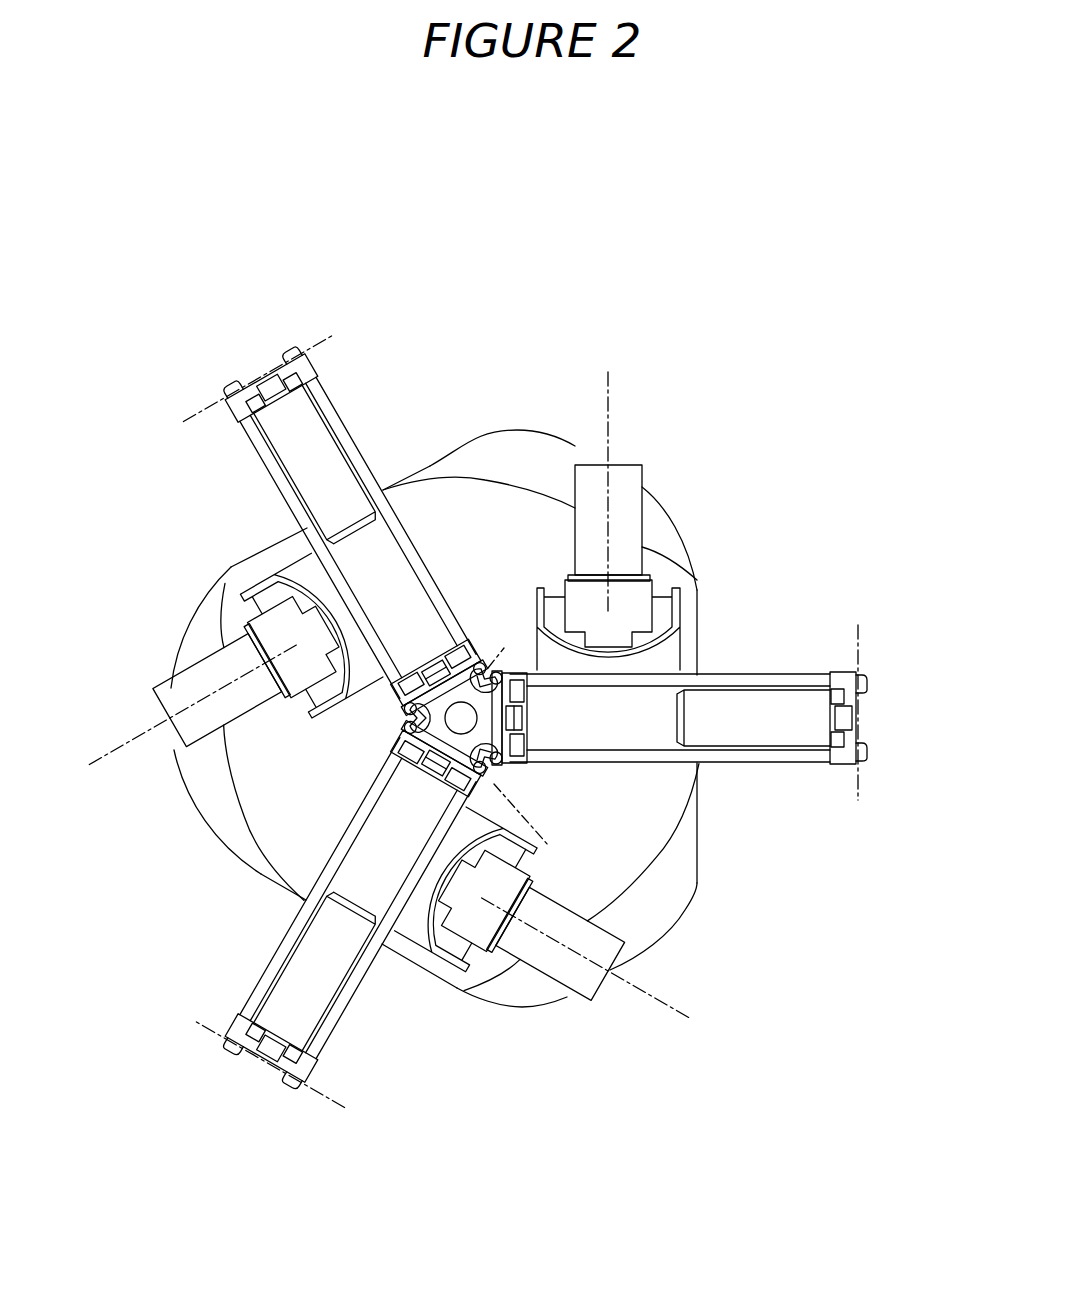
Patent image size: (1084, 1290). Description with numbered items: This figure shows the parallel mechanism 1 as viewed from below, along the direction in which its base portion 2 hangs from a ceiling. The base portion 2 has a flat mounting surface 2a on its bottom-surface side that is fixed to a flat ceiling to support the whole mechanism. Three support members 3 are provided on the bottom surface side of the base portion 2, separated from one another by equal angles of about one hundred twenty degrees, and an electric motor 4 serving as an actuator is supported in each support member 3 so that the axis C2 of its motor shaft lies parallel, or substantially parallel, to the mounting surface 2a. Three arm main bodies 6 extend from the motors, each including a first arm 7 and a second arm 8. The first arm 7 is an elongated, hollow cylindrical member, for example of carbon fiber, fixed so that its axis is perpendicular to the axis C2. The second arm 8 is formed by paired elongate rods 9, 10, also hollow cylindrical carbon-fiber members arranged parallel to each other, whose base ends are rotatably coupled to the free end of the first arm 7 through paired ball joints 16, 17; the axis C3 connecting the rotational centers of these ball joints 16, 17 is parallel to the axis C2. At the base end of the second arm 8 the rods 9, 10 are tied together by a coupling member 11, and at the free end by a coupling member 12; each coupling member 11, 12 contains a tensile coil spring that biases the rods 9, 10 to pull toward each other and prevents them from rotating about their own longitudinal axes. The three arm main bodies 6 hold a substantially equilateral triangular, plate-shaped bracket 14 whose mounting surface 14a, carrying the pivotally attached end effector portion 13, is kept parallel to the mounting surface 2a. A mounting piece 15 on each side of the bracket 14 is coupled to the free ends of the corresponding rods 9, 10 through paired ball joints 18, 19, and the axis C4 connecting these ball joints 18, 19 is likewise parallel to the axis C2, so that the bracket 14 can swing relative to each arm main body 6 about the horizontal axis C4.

The parallel mechanism 1 is at (683, 292).
The base portion 2 is at (520, 428).
The mounting surface 2a is at (688, 540).
The support member 3 is at (305, 548).
The electric motor 4 is at (620, 515).
The arm main body 6 is at (557, 711).
The first arm 7 is at (330, 418).
The second arm 8 is at (496, 717).
The rod 9 is at (300, 488).
The rod 10 is at (280, 432).
The coupling member 11 is at (262, 372).
The coupling member 12 is at (435, 672).
The end effector portion 13 is at (493, 665).
The bracket 14 is at (512, 712).
The mounting surface 14a is at (402, 718).
The mounting piece 15 is at (437, 655).
The ball joint 16 is at (224, 378).
The ball joint 17 is at (292, 362).
The ball joint 18 is at (415, 680).
The ball joint 19 is at (468, 655).
The axis of motor shaft C2 is at (636, 380).
The axis connecting ball joints C3 is at (335, 325).
The axis connecting ball joints C4 is at (500, 640).